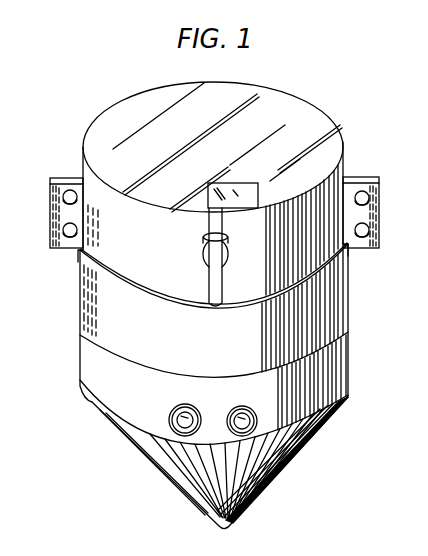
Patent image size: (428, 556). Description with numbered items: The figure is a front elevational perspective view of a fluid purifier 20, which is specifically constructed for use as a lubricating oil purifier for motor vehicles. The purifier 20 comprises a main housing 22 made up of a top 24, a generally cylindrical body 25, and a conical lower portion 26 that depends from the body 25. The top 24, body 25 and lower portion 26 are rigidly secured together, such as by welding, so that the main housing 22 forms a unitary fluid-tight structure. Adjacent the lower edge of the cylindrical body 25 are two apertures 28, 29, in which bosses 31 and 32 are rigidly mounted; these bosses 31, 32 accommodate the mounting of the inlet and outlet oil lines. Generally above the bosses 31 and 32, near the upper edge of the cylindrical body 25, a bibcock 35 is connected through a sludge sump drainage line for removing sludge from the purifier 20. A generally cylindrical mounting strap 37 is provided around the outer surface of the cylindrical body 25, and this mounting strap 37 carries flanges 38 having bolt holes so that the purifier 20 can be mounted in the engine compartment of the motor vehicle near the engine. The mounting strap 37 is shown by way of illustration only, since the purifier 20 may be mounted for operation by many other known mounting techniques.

The fluid purifier 20 is at (102, 432).
The main housing 22 is at (337, 414).
The top 24 is at (284, 103).
The cylindrical body 25 is at (327, 362).
The conical lower portion 26 is at (287, 458).
The aperture 28 is at (236, 419).
The aperture 29 is at (174, 419).
The boss 31 is at (249, 406).
The boss 32 is at (177, 434).
The bibcock 35 is at (199, 262).
The mounting strap 37 is at (350, 288).
The flanges 38 is at (58, 177).